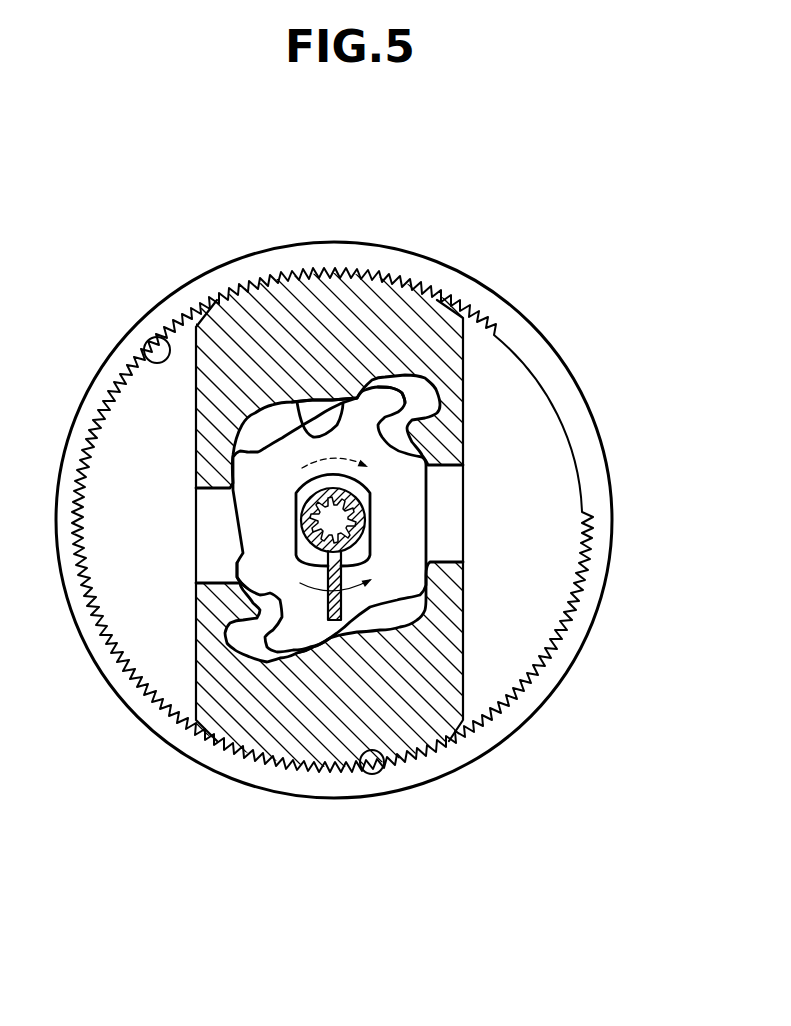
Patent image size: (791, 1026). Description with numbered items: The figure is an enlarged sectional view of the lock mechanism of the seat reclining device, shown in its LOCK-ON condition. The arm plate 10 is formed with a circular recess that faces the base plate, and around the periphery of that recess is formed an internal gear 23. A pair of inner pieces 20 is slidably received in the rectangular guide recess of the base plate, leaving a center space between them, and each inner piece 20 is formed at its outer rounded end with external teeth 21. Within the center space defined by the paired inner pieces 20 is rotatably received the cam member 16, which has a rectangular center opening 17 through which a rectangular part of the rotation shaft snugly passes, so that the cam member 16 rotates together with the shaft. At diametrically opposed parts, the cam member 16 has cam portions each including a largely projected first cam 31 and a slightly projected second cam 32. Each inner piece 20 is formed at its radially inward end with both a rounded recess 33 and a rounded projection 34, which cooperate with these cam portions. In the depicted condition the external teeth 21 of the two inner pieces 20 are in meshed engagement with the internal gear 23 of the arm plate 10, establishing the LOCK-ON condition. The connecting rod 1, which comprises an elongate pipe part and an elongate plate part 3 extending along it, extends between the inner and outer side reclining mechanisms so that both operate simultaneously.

The connecting rod 1 is at (307, 492).
The elongate plate part 3 is at (342, 562).
The arm plate 10 is at (488, 303).
The cam member 16 is at (405, 518).
The rectangular center opening 17 is at (368, 488).
The inner piece 20 is at (360, 292).
The external teeth 21 is at (413, 288).
The internal gear 23 is at (160, 335).
The first cam 31 is at (387, 392).
The second cam 32 is at (302, 430).
The rounded recess 33 is at (428, 406).
The rounded projection 34 is at (328, 398).